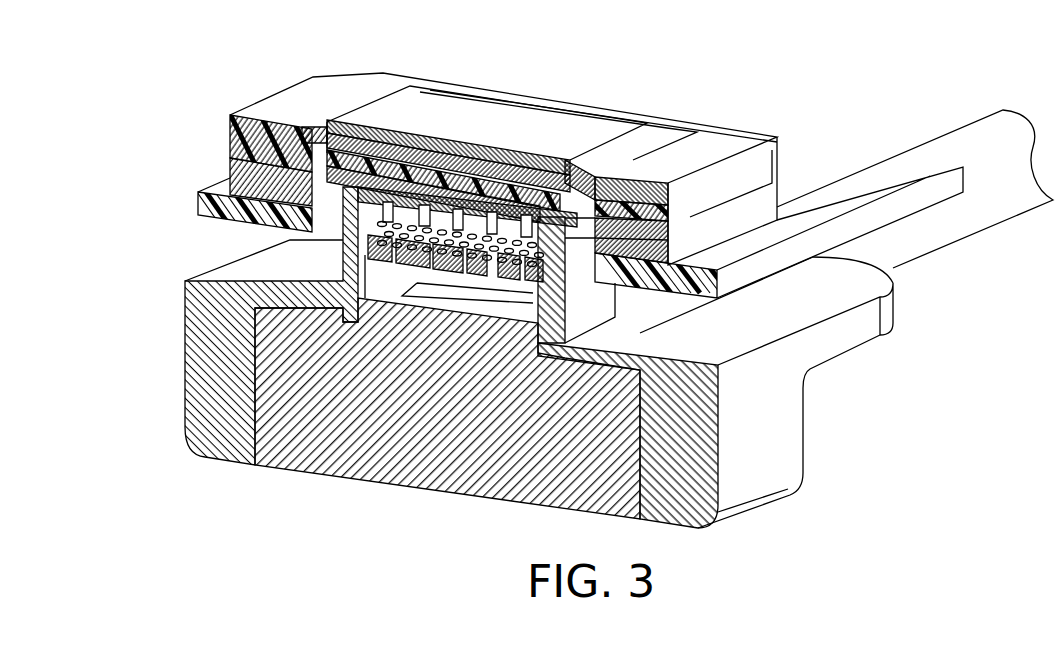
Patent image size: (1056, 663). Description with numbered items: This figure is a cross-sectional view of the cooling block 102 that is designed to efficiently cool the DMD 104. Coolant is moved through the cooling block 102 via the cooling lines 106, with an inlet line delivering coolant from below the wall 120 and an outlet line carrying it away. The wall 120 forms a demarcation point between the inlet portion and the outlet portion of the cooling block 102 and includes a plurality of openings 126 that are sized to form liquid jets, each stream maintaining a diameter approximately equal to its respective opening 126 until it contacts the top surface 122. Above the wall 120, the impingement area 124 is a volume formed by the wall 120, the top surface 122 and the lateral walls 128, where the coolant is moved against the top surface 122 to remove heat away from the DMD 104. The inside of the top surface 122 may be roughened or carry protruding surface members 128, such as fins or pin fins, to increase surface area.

The cooling block 102 is at (262, 273).
The digital micromirror device (DMD) 104 is at (268, 130).
The cooling line 106 is at (995, 232).
The wall 120 is at (370, 237).
The top surface 122 is at (362, 205).
The impingement area 124 is at (365, 228).
The openings 126 is at (455, 248).
The lateral walls 128 is at (525, 230).